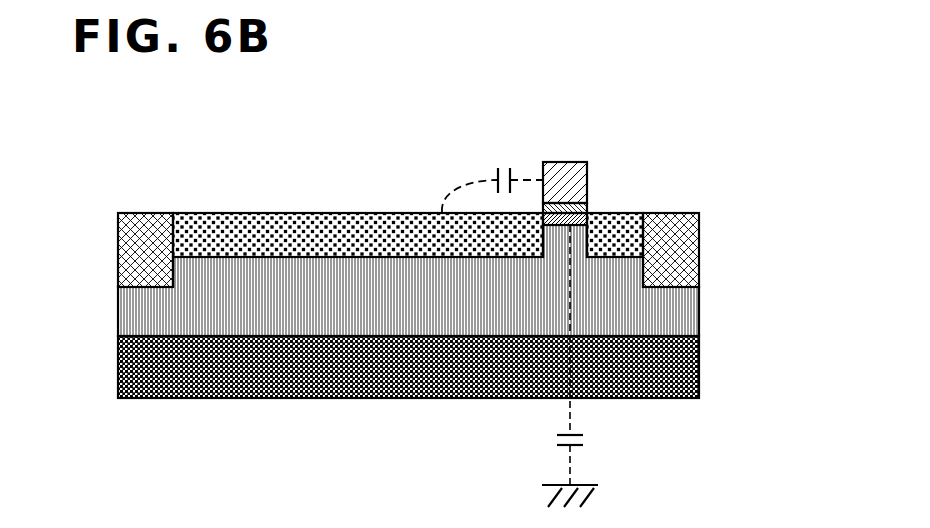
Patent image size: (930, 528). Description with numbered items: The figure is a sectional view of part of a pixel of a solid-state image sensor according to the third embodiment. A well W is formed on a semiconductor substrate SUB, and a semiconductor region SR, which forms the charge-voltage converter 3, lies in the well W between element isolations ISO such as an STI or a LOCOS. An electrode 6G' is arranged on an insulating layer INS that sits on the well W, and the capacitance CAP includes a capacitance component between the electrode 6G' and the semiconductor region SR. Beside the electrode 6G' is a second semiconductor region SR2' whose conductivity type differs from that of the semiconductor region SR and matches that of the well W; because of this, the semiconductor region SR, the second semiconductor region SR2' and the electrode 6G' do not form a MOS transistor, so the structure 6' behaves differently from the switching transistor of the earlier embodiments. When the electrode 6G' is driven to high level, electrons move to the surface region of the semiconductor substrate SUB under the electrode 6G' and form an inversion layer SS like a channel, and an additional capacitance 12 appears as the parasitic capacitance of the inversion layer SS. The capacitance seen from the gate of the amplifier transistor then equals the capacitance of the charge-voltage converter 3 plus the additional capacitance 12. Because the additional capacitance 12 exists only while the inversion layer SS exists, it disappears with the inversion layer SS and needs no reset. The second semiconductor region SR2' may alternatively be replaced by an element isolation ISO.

The charge-voltage converter 3 is at (471, 268).
The transistor 6' is at (614, 127).
The electrode 6G' is at (570, 151).
The insulating layer INS is at (587, 208).
The capacitance CAP is at (494, 165).
The semiconductor region SR is at (360, 235).
The second semiconductor region SR2' is at (669, 364).
The inversion layer SS is at (557, 225).
The element isolation ISO is at (138, 232).
The well W is at (699, 313).
The semiconductor substrate SUB is at (699, 370).
The additional capacitance 12 is at (587, 440).